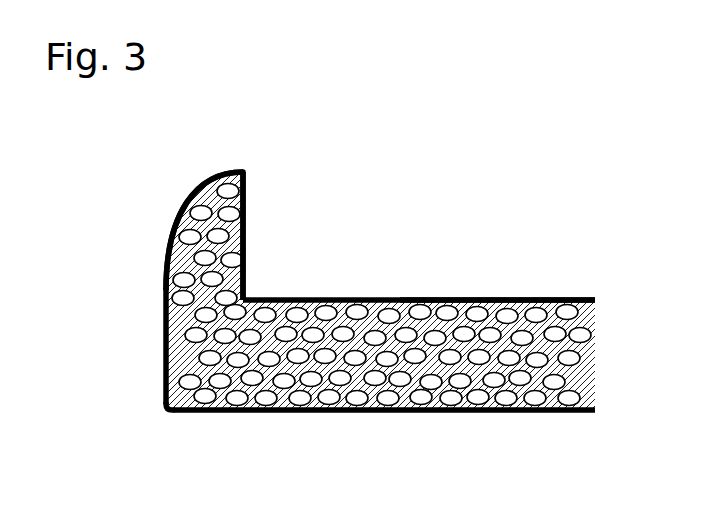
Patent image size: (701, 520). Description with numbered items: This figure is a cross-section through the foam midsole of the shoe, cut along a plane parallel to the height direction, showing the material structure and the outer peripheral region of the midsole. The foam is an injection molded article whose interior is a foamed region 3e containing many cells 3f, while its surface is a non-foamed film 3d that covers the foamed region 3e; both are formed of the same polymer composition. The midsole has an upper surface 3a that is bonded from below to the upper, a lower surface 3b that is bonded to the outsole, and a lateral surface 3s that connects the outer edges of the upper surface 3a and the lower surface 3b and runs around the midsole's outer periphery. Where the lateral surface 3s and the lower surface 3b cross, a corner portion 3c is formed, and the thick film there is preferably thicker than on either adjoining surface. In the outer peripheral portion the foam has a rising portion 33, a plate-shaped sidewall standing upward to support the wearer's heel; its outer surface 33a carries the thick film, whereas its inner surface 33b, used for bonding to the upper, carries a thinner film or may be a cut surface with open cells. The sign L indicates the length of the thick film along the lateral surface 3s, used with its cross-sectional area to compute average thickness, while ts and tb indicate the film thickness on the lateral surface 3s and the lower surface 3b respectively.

The rising portion 33 is at (243, 171).
The outer surface of rising portion 33a is at (172, 208).
The inner surface of rising portion 33b is at (247, 212).
The upper surface 3a is at (462, 294).
The lower surface 3b is at (457, 420).
The corner portion 3c is at (161, 420).
The non-foamed film 3d is at (273, 300).
The foamed region 3e is at (305, 300).
The cells 3f is at (352, 315).
The lateral surface 3s is at (158, 331).
The length of thick film L is at (225, 150).
The thickness of side wall ts is at (213, 366).
The thickness of base tb is at (232, 365).